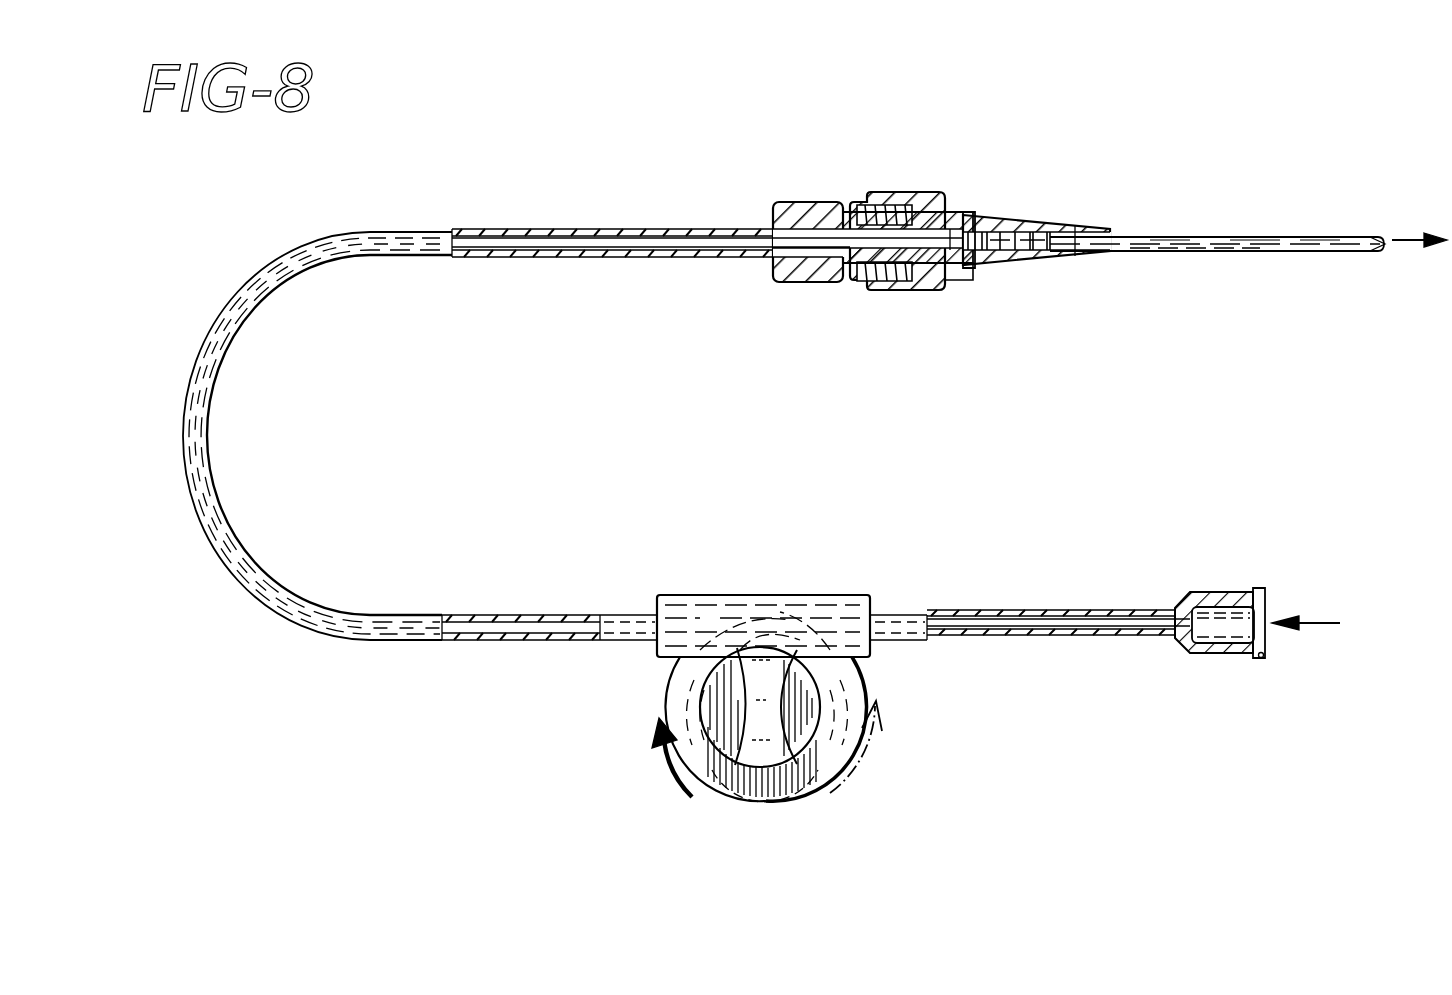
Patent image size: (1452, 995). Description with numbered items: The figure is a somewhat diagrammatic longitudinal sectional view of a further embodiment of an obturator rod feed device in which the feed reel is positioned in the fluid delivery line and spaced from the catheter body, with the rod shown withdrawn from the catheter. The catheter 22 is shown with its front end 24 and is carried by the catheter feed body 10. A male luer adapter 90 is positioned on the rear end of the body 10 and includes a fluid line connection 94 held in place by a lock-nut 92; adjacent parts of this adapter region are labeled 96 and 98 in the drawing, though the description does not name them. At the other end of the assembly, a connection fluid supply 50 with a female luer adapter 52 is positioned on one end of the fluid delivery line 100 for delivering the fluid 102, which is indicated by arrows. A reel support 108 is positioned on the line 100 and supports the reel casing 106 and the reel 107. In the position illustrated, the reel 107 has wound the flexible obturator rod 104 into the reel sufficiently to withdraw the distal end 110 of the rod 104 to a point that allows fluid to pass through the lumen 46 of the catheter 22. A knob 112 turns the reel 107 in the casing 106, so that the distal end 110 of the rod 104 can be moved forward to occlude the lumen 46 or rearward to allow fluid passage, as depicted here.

The catheter feed body 10 is at (1075, 224).
The catheter 22 is at (1293, 236).
The front end 24 is at (1383, 252).
The lumen 46 is at (1203, 252).
The connection fluid supply 50 is at (1150, 604).
The female luer adapter 52 is at (1243, 661).
The male luer adapter 90 is at (948, 202).
The lock-nut 92 is at (898, 291).
The fluid line connection 94 is at (790, 201).
The fitting body 96 is at (983, 223).
The tapered sleeve 98 is at (1052, 252).
The fluid delivery line 100 is at (420, 231).
The fluid 102 is at (1405, 239).
The flexible obturator rod 104 is at (660, 231).
The reel casing 106 is at (857, 685).
The reel 107 is at (820, 790).
The reel support 108 is at (825, 597).
The distal end 110 is at (957, 281).
The knob 112 is at (770, 752).